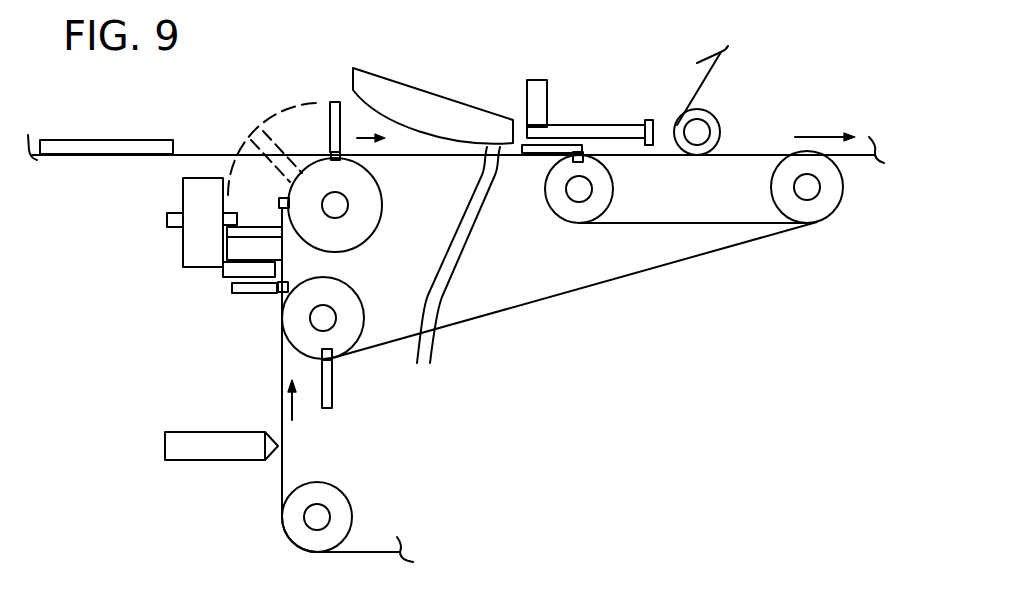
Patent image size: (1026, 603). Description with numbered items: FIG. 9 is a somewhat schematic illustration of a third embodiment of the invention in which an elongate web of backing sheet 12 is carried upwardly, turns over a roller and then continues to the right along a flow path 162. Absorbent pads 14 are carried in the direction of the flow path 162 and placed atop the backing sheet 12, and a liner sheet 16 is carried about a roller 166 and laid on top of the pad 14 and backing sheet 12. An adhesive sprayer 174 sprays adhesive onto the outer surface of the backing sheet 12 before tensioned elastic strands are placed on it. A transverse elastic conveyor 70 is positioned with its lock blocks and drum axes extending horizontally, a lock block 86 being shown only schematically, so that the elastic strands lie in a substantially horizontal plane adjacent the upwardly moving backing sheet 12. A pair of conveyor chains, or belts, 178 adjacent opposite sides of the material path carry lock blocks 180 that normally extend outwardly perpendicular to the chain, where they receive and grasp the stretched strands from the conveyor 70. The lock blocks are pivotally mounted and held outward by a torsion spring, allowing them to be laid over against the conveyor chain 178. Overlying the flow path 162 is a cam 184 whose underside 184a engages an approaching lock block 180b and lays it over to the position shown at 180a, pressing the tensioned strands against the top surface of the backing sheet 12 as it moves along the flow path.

The backing sheet 12 is at (280, 478).
The absorbent pad 14 is at (127, 138).
The liner sheet 16 is at (697, 80).
The transverse elastic conveyor 70 is at (166, 276).
The lock block 86 is at (232, 273).
The flow path 162 is at (823, 140).
The roller 166 is at (717, 119).
The adhesive sprayer 174 is at (185, 450).
The conveyor chain 178 is at (642, 270).
The lock block 180 is at (257, 293).
The laid-over lock block 180a is at (535, 153).
The approaching lock block 180b is at (330, 116).
The cam 184 is at (437, 108).
The cam underside 184a is at (425, 137).